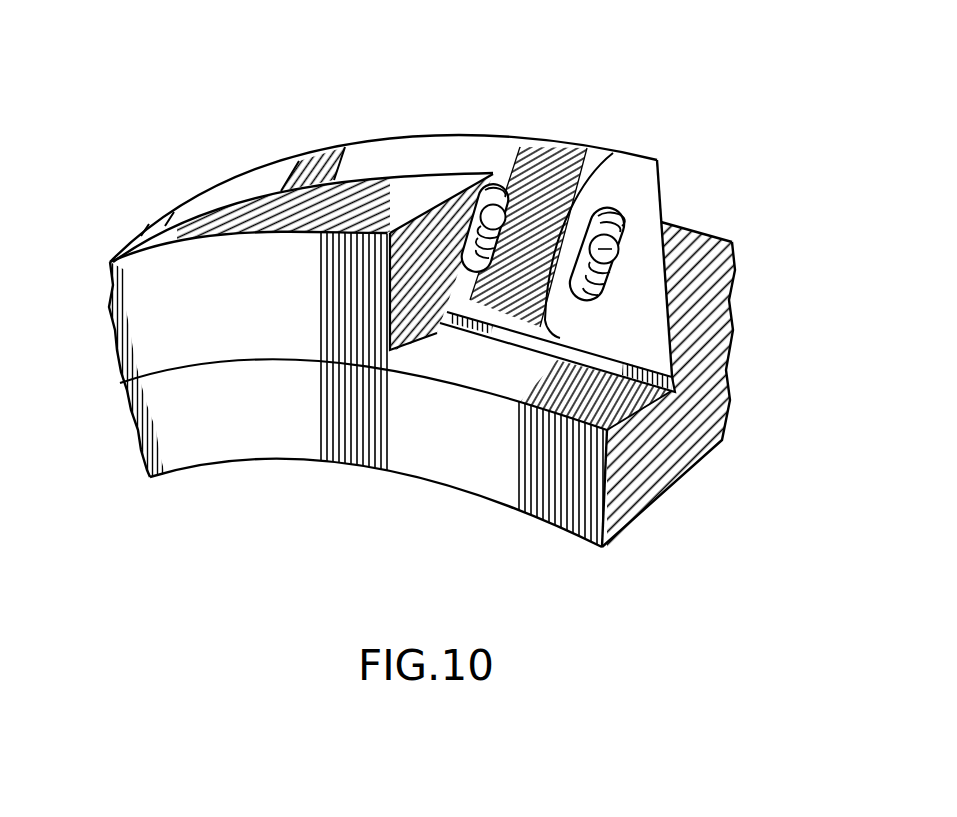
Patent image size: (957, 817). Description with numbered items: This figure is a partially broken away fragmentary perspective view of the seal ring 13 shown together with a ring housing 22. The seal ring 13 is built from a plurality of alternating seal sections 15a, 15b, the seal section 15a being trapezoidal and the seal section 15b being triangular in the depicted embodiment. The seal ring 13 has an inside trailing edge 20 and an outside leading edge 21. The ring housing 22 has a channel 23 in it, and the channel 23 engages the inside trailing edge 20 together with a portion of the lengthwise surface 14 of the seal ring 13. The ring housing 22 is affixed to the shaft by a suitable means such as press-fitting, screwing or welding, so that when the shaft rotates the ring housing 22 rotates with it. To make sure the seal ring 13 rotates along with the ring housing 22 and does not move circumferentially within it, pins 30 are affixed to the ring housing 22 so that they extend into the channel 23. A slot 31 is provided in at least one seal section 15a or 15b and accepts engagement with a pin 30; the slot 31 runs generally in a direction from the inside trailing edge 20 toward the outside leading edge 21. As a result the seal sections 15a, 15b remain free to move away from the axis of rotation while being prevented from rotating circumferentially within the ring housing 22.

The seal ring 13 is at (676, 137).
The lengthwise surface 14 is at (628, 192).
The seal section 15a is at (418, 152).
The seal section 15b is at (372, 152).
The inside trailing edge 20 is at (620, 352).
The outside leading edge 21 is at (262, 162).
The ring housing 22 is at (153, 335).
The channel 23 is at (690, 303).
The pins 30 is at (620, 242).
The slot 31 is at (510, 183).